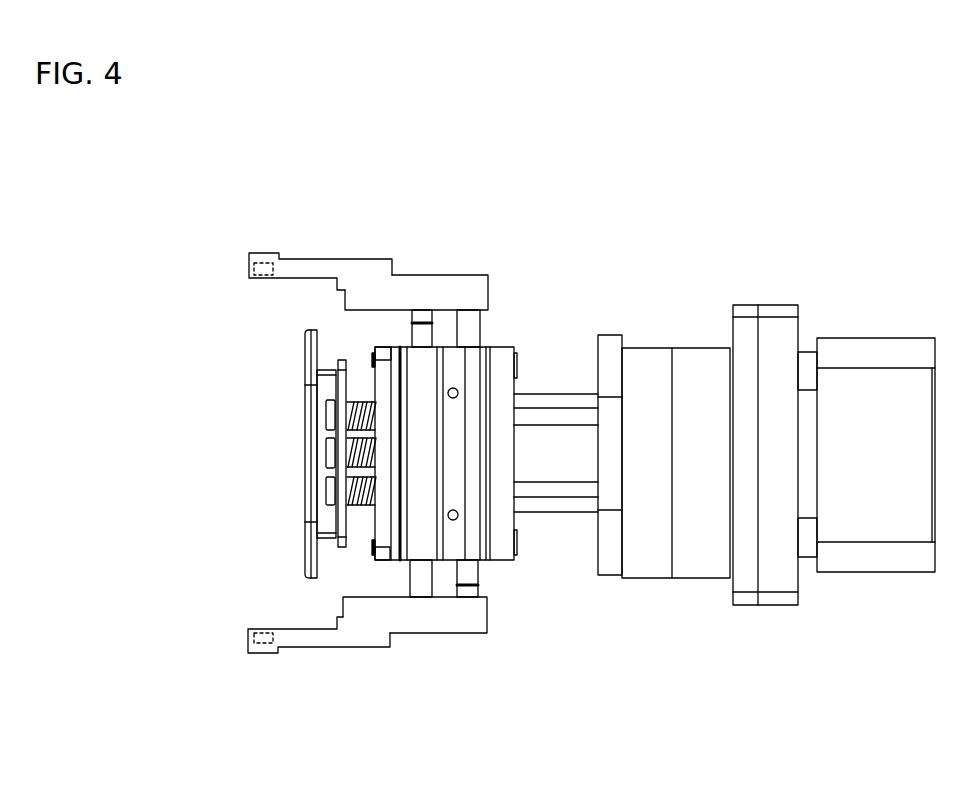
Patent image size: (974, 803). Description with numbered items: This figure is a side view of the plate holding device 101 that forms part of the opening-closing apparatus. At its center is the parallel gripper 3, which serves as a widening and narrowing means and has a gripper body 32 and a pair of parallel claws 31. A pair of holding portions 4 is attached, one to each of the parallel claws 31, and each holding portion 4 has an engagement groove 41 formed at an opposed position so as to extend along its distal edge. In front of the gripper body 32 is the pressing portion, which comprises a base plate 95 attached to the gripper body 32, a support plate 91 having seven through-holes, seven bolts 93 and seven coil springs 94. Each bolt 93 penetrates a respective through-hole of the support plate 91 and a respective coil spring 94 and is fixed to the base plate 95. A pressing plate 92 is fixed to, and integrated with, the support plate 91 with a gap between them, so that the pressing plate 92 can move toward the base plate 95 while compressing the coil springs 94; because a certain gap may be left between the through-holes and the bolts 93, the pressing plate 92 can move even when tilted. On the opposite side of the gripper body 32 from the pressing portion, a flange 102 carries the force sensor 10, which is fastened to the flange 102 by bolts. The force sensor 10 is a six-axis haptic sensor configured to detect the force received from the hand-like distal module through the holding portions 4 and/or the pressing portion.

The parallel gripper 3 is at (459, 506).
The holding portion 4 is at (320, 414).
The force sensor 10 is at (907, 347).
The parallel claw 31 is at (480, 287).
The gripper body 32 is at (455, 370).
The engagement groove 41 is at (264, 278).
The support plate 91 is at (340, 548).
The pressing plate 92 is at (305, 470).
The bolt 93 is at (355, 507).
The coil spring 94 is at (363, 507).
The base plate 95 is at (382, 560).
The plate holding device 101 is at (459, 445).
The flange 102 is at (772, 303).